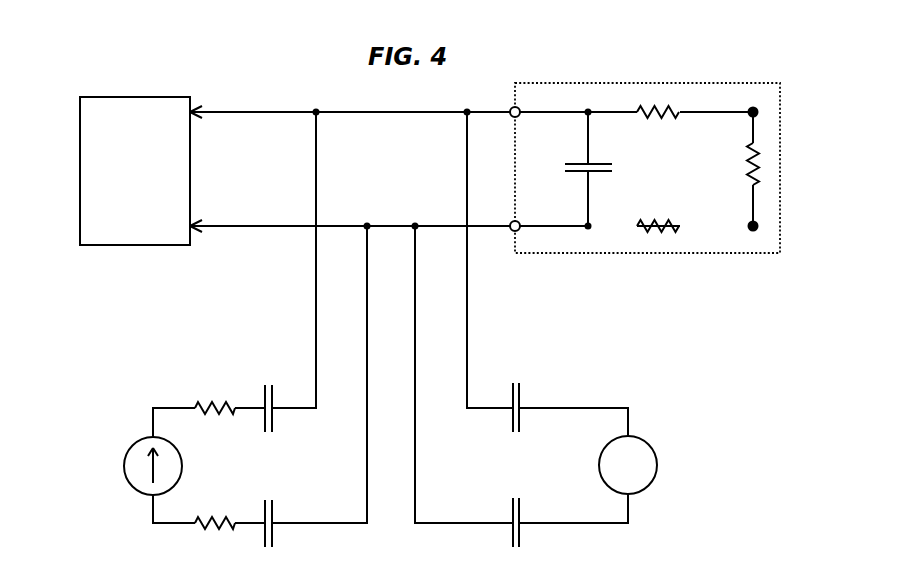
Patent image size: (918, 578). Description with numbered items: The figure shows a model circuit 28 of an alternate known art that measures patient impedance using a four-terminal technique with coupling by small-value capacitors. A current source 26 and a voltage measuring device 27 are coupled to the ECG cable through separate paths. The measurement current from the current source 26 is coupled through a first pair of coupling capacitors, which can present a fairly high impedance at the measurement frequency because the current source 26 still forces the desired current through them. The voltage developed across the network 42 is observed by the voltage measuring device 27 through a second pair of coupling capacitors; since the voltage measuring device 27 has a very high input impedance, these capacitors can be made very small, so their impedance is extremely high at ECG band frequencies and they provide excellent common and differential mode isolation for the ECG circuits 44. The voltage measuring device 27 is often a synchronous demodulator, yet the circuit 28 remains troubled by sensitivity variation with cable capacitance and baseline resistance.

The ECG circuits 44 is at (148, 245).
The network 42 is at (567, 253).
The current source 26 is at (147, 437).
The voltage measuring device 27 is at (657, 459).
The circuit 28 is at (707, 407).